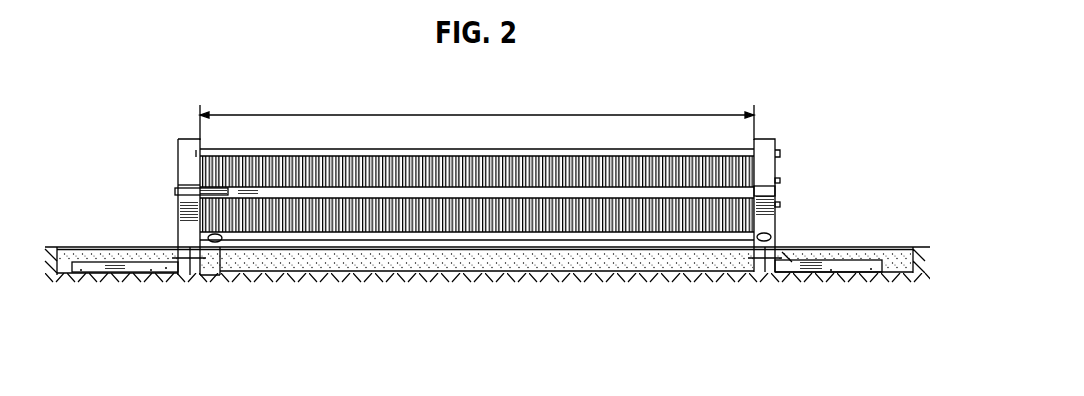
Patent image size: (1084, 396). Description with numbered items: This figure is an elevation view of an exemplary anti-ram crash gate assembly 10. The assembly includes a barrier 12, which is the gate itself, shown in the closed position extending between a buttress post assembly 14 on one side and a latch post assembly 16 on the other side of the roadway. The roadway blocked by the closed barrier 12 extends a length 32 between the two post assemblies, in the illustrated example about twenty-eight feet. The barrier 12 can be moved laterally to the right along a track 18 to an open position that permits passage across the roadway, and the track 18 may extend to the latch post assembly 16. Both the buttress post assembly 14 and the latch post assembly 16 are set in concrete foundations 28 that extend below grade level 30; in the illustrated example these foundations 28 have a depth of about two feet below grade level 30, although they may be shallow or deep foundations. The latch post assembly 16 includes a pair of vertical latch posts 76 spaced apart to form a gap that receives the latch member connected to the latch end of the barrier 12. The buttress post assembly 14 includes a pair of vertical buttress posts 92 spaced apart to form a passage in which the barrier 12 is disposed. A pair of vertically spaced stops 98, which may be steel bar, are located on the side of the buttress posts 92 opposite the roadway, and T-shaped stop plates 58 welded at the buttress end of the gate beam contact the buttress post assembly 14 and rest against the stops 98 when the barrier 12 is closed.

The anti-ram crash gate assembly 10 is at (579, 90).
The barrier 12 is at (603, 149).
The buttress post assembly 14 is at (840, 148).
The latch post assembly 16 is at (113, 157).
The track 18 is at (858, 247).
The concrete foundations 28 is at (128, 266).
The grade level 30 is at (93, 247).
The length 32 is at (402, 114).
The stop plates 58 is at (776, 193).
The latch posts 76 is at (186, 167).
The buttress posts 92 is at (765, 139).
The stops 98 is at (778, 180).